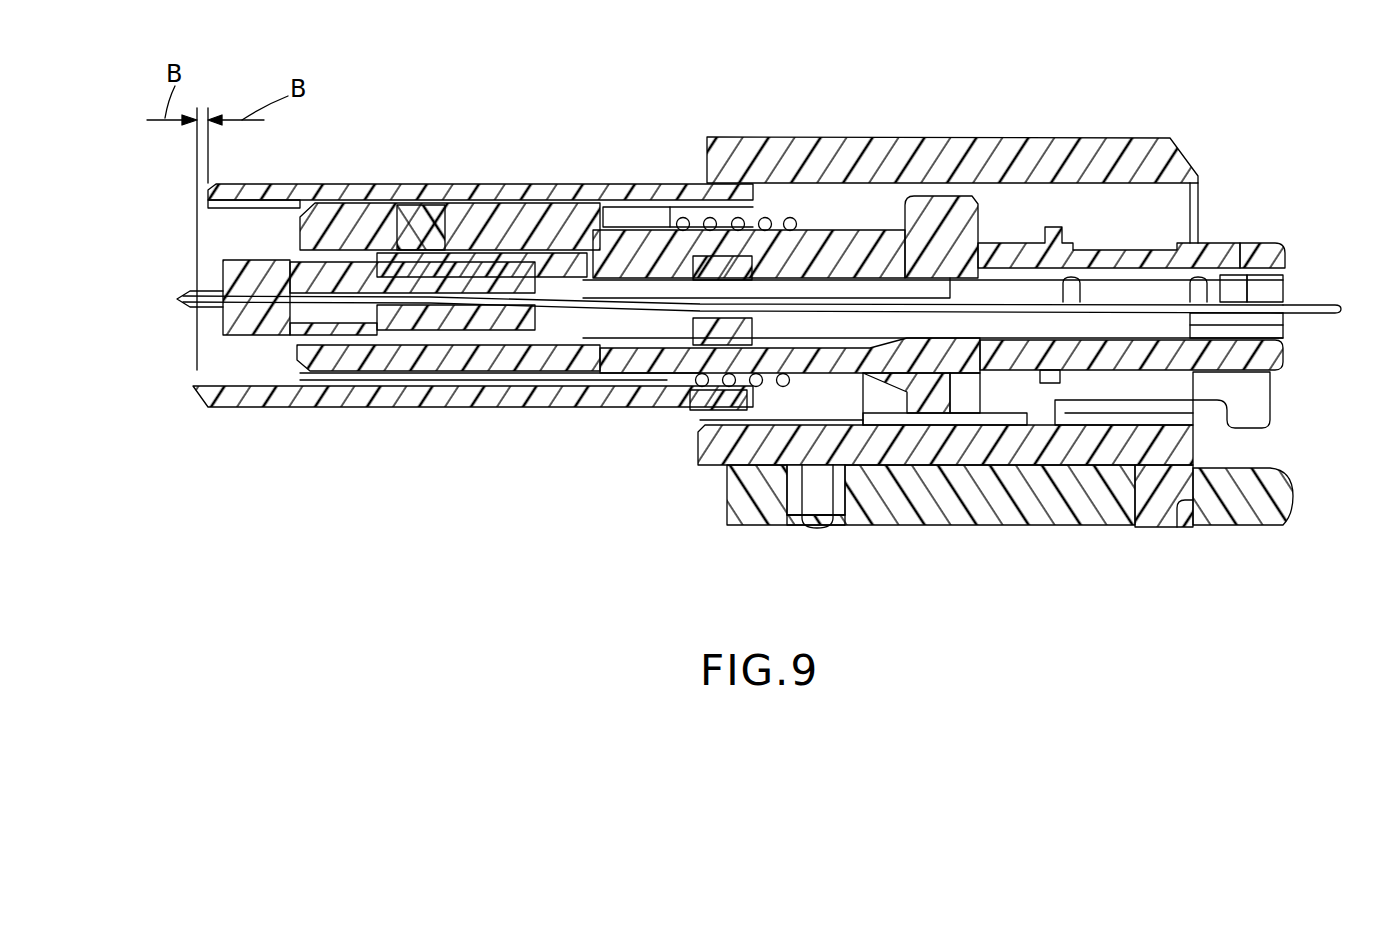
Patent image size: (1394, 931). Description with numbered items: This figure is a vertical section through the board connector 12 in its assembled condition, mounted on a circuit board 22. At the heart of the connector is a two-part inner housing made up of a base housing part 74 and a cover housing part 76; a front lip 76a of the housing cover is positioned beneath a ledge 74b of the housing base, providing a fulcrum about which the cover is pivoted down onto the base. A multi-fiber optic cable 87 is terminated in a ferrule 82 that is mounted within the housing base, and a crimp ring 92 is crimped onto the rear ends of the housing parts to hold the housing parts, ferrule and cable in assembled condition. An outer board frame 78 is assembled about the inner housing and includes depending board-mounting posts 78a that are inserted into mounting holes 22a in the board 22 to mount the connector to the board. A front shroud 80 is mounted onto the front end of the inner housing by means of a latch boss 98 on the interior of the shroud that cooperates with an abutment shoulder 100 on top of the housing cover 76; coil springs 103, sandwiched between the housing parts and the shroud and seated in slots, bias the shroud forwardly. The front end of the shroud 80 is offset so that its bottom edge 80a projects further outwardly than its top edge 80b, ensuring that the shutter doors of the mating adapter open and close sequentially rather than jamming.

The board connector 12 is at (914, 103).
The circuit board 22 is at (990, 520).
The mounting holes 22a is at (800, 525).
The base housing part 74 is at (525, 375).
The ledge 74b is at (413, 213).
The cover housing part 76 is at (560, 192).
The front lip 76a is at (462, 198).
The outer board frame 78 is at (1066, 134).
The board-mounting posts 78a is at (822, 510).
The front shroud 80 is at (422, 398).
The bottom edge 80a is at (196, 388).
The top edge 80b is at (212, 206).
The ferrule 82 is at (228, 313).
The multi-fiber optic cable 87 is at (1300, 304).
The crimp ring 92 is at (1160, 245).
The latch boss 98 is at (645, 232).
The abutment shoulder 100 is at (630, 210).
The coil springs 103 is at (790, 228).